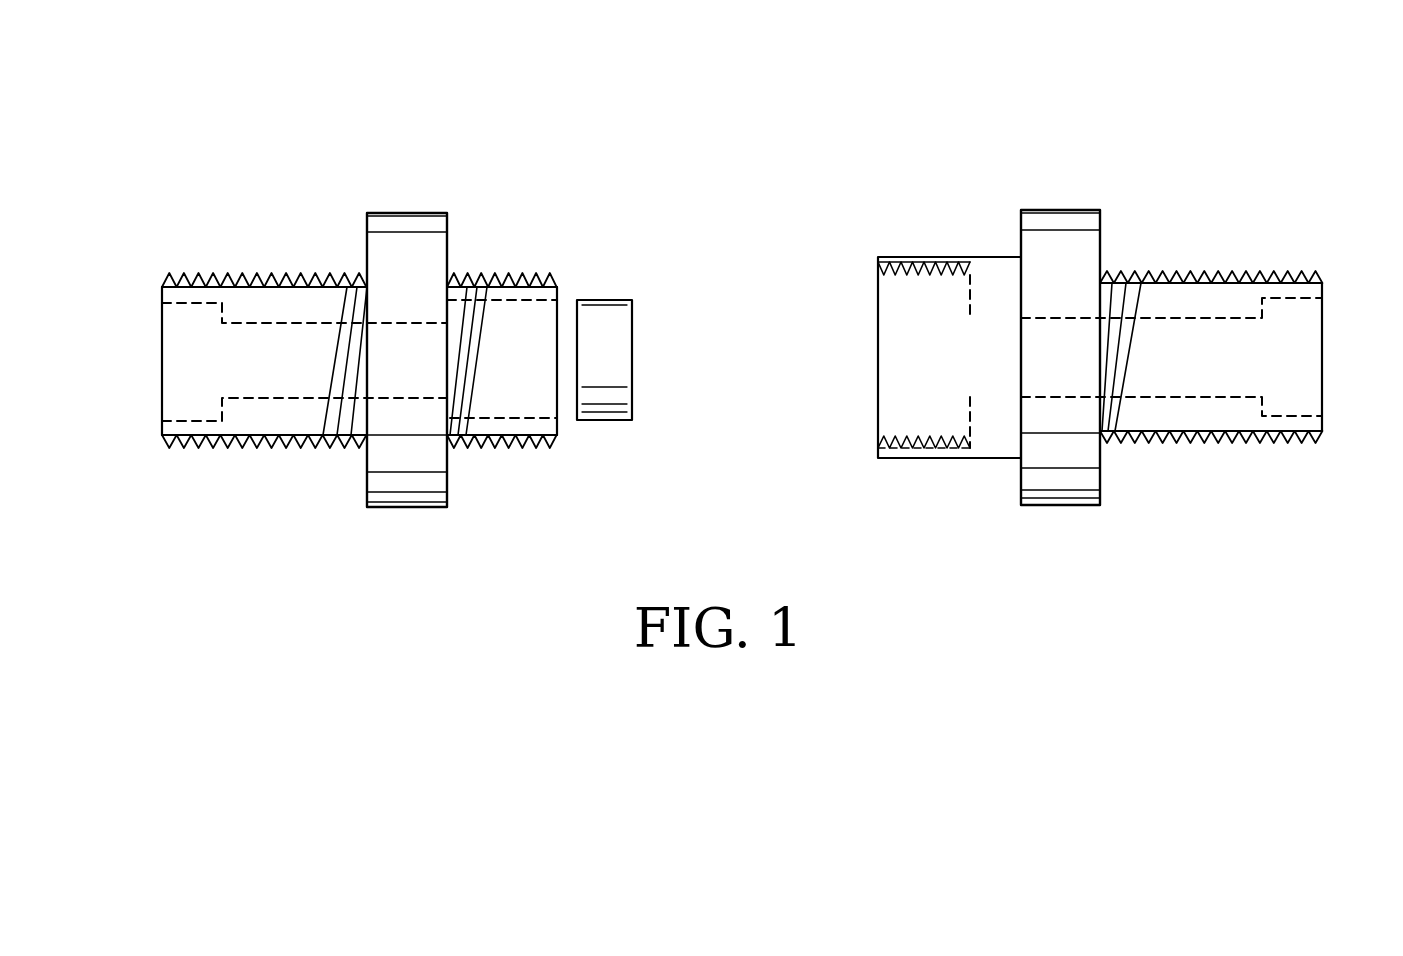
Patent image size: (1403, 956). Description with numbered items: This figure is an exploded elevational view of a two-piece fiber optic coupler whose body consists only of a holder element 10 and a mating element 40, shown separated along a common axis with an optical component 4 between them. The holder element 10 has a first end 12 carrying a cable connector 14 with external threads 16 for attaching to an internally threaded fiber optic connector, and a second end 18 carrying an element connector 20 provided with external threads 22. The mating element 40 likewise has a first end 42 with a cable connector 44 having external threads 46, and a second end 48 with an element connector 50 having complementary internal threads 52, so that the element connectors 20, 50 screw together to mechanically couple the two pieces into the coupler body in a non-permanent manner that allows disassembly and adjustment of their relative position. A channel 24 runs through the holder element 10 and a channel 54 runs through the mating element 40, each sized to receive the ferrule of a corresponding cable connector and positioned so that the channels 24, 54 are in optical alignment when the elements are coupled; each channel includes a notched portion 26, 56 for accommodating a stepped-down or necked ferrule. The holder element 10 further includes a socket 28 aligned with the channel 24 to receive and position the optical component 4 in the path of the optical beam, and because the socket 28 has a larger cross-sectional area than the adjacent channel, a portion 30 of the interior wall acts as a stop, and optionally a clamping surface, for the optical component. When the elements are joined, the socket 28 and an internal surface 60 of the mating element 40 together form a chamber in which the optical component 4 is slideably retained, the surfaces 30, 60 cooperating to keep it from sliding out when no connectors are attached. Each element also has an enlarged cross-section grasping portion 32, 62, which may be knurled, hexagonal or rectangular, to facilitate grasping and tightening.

The optical component 4 is at (610, 300).
The holder element 10 is at (549, 176).
The first end 12 is at (168, 475).
The cable connector 14 is at (200, 278).
The external threads 16 is at (206, 277).
The second end 18 is at (545, 458).
The element connector 20 is at (522, 270).
The external threads 22 is at (497, 284).
The channel 24 is at (278, 328).
The notched portion 26 is at (180, 421).
The socket 28 is at (503, 424).
The portion of interior wall 30 is at (450, 280).
The grasping portion 32 is at (410, 212).
The mating element 40 is at (1070, 130).
The first end 42 is at (1326, 445).
The cable connector 44 is at (1290, 271).
The external threads 46 is at (1118, 272).
The second end 48 is at (872, 464).
The element connector 50 is at (893, 262).
The internal threads 52 is at (895, 446).
The channel 54 is at (1200, 318).
The notched portion 56 is at (1296, 418).
The internal surface 60 is at (970, 315).
The grasping portion 62 is at (1062, 210).